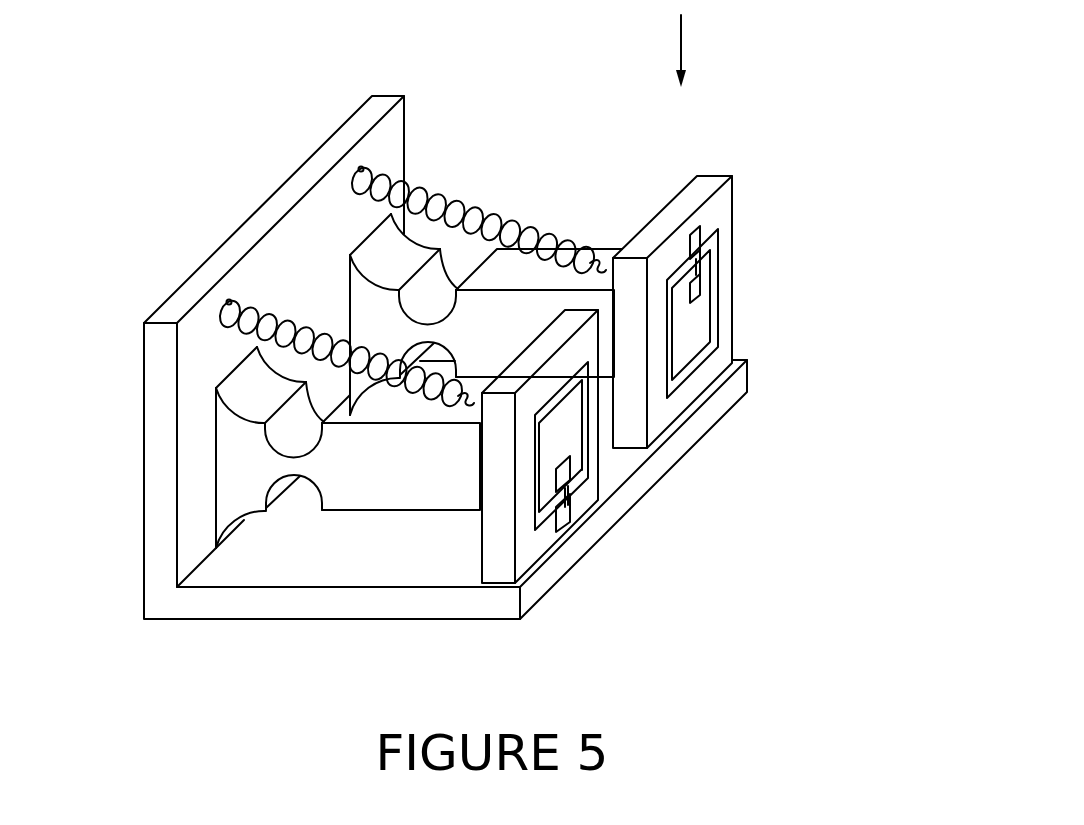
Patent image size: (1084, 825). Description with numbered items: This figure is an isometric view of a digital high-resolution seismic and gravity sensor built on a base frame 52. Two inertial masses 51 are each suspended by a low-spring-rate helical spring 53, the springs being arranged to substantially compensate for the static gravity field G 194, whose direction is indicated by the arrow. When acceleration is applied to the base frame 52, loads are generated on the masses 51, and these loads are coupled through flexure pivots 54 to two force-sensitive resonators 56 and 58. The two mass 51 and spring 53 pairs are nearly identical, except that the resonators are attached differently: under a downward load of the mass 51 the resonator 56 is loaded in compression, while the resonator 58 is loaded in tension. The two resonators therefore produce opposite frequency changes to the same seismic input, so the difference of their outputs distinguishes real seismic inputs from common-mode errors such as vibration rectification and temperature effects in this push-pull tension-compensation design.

The inertial mass 51 is at (516, 278).
The base frame 52 is at (323, 143).
The helical spring 53 is at (455, 191).
The flexure pivot 54 is at (428, 303).
The force-sensitive resonator 56 is at (570, 513).
The force-sensitive resonator 58 is at (700, 227).
The static gravity field 194 is at (682, 30).